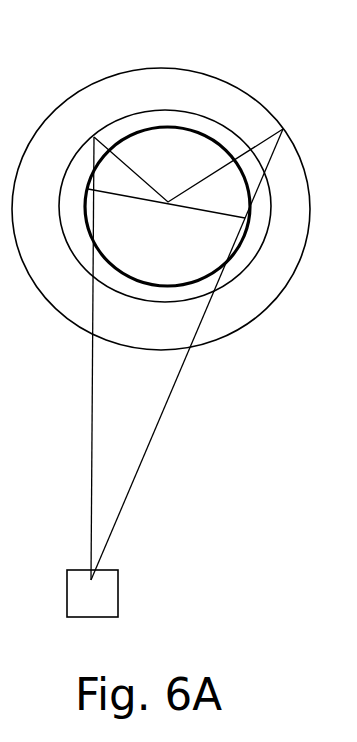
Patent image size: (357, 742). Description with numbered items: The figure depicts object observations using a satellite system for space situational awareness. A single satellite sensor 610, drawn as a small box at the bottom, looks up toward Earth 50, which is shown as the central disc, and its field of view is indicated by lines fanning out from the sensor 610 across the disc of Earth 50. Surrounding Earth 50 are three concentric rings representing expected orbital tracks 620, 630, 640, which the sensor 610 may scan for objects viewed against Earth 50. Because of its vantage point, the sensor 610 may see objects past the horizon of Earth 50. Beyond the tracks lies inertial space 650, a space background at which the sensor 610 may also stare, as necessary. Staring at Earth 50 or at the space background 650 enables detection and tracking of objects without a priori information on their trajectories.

The inertial space 650 is at (90, 46).
The expected orbital track 640 is at (256, 98).
The expected orbital track 630 is at (208, 118).
The expected orbital track 620 is at (167, 128).
The Earth 50 is at (177, 245).
The satellite sensor 610 is at (118, 595).